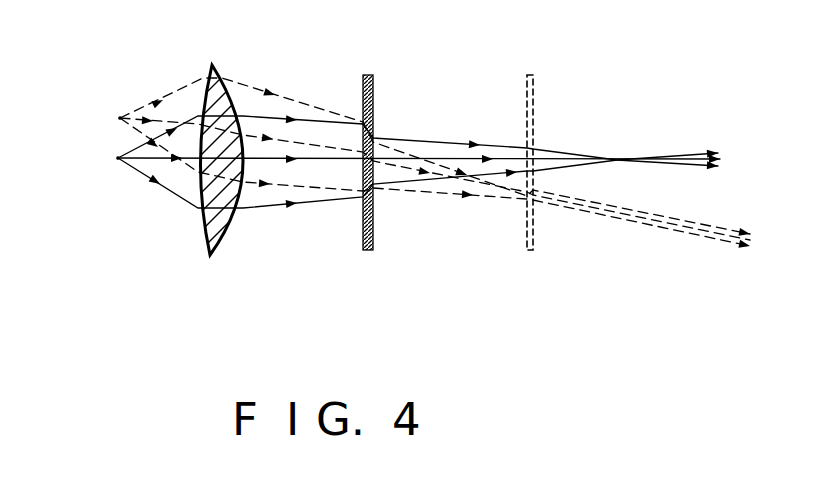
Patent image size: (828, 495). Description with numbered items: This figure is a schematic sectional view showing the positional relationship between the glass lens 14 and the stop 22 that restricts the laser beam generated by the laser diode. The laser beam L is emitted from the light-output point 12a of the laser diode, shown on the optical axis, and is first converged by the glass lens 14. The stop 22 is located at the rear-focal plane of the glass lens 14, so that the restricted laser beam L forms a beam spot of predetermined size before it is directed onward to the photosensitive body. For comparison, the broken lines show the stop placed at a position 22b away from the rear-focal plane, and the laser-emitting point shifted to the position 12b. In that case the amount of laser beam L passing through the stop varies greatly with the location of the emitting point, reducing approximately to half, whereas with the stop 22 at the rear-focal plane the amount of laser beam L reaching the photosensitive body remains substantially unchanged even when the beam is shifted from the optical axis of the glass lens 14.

The light-output point 12a is at (117, 160).
The shifted position of the laser-emitting point 12b is at (119, 117).
The glass lens 14 is at (210, 258).
The stop 22 is at (366, 74).
The displaced stop position 22b is at (532, 73).
The laser beam L is at (313, 147).